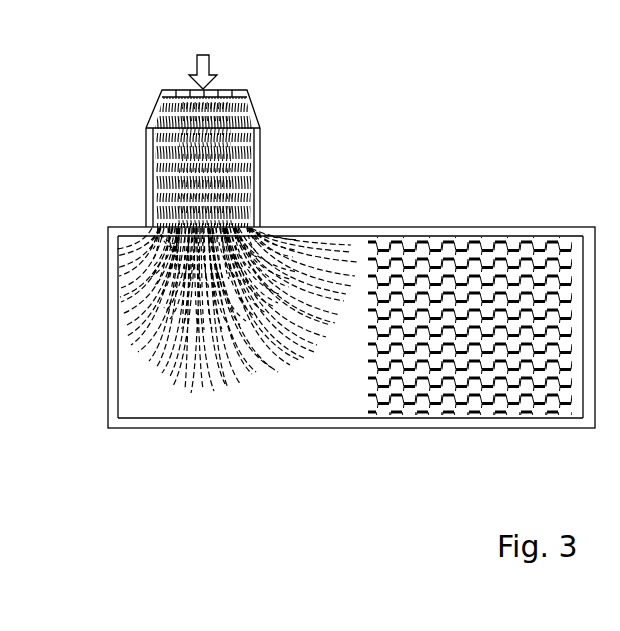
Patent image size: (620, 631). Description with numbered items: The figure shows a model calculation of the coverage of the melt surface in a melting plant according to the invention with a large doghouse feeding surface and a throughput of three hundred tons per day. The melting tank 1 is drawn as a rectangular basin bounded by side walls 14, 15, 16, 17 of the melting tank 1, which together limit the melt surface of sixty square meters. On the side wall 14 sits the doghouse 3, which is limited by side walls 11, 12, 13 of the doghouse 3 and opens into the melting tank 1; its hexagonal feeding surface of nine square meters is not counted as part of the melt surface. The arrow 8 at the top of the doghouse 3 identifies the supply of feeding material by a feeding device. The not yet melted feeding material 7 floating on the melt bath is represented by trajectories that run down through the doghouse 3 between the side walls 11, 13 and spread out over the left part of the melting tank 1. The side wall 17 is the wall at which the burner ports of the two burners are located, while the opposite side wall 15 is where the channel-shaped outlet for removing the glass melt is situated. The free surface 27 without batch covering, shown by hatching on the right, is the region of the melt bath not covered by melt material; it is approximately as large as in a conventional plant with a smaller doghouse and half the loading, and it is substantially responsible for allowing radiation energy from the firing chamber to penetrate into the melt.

The melting tank 1 is at (460, 220).
The doghouse 3 is at (140, 130).
The feeding material 7 is at (250, 340).
The arrow 8 is at (206, 72).
The side wall of doghouse 11 is at (146, 176).
The side wall of doghouse 12 is at (167, 90).
The side wall of doghouse 13 is at (262, 142).
The side wall of melting tank 14 is at (338, 226).
The side wall of melting tank 15 is at (600, 294).
The side wall of melting tank 16 is at (390, 428).
The side wall of melting tank 17 is at (107, 388).
The free surface without batch covering 27 is at (497, 255).